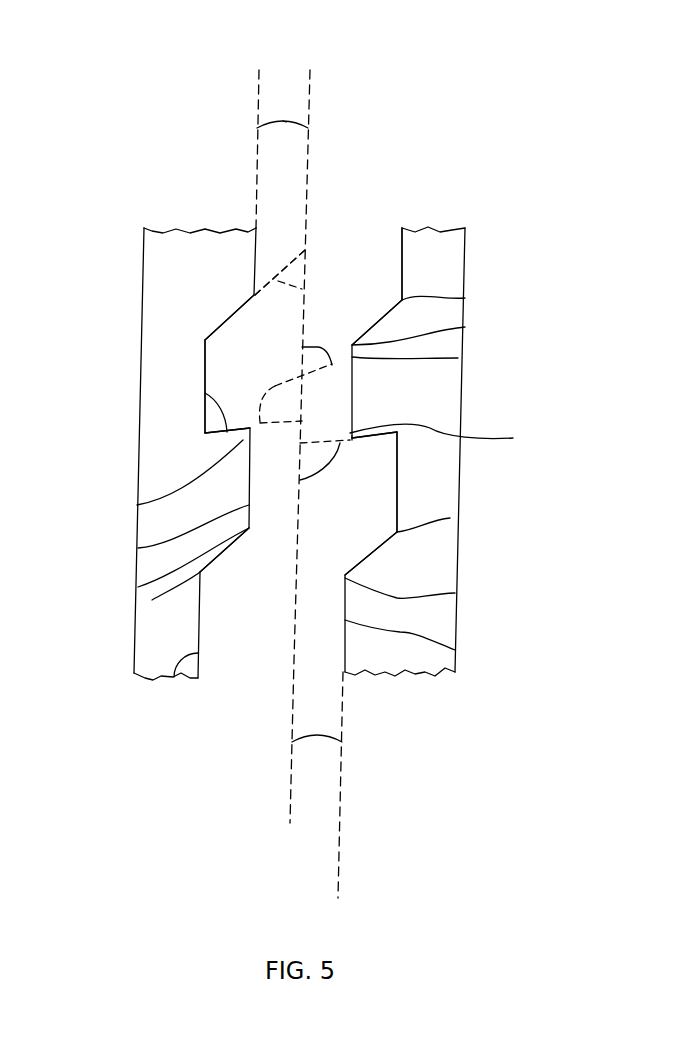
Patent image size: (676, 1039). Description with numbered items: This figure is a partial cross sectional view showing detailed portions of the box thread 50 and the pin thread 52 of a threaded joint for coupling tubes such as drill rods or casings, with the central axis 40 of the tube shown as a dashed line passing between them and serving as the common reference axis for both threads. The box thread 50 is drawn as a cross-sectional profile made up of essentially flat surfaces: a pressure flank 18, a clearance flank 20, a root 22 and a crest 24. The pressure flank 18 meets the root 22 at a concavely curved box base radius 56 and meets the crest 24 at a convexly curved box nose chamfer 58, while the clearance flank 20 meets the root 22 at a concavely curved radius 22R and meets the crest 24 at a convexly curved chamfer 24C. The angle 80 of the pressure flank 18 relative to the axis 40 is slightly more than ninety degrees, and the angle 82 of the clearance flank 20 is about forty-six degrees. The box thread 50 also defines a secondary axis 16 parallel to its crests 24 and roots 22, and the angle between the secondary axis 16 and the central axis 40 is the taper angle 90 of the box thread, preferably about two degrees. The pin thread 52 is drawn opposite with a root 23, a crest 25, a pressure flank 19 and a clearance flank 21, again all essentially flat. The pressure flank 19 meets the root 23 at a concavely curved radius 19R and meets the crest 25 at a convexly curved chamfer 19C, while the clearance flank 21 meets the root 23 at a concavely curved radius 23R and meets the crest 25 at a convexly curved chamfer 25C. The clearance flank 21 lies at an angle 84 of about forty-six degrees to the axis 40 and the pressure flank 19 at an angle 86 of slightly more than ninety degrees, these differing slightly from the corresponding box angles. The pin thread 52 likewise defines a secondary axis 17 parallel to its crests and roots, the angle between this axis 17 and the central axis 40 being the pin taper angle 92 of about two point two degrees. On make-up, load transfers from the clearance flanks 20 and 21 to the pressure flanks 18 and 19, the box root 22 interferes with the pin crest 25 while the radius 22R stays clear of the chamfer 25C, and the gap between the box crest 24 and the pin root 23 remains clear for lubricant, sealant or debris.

The secondary axis 16 is at (257, 108).
The secondary axis 17 is at (340, 873).
The pressure flank 18 is at (205, 393).
The pressure flank 19 is at (370, 436).
The chamfer 19C is at (352, 436).
The radius 19R is at (452, 438).
The clearance flank 20 is at (232, 317).
The clearance flank 21 is at (393, 303).
The root 22 is at (204, 414).
The radius 22R is at (152, 600).
The root 23 is at (402, 265).
The radius 23R is at (465, 298).
The crest 24 is at (138, 548).
The chamfer 24C is at (138, 587).
The crest 25 is at (458, 358).
The chamfer 25C is at (465, 327).
The central axis 40 is at (308, 110).
The box thread 50 is at (143, 227).
The pin thread 52 is at (466, 226).
The box base radius 56 is at (204, 436).
The box nose chamfer 58 is at (245, 438).
The angle 80 is at (272, 388).
The angle 82 is at (300, 288).
The angle 84 is at (323, 480).
The angle 86 is at (318, 347).
The taper angle 90 is at (286, 122).
The taper angle 92 is at (310, 737).